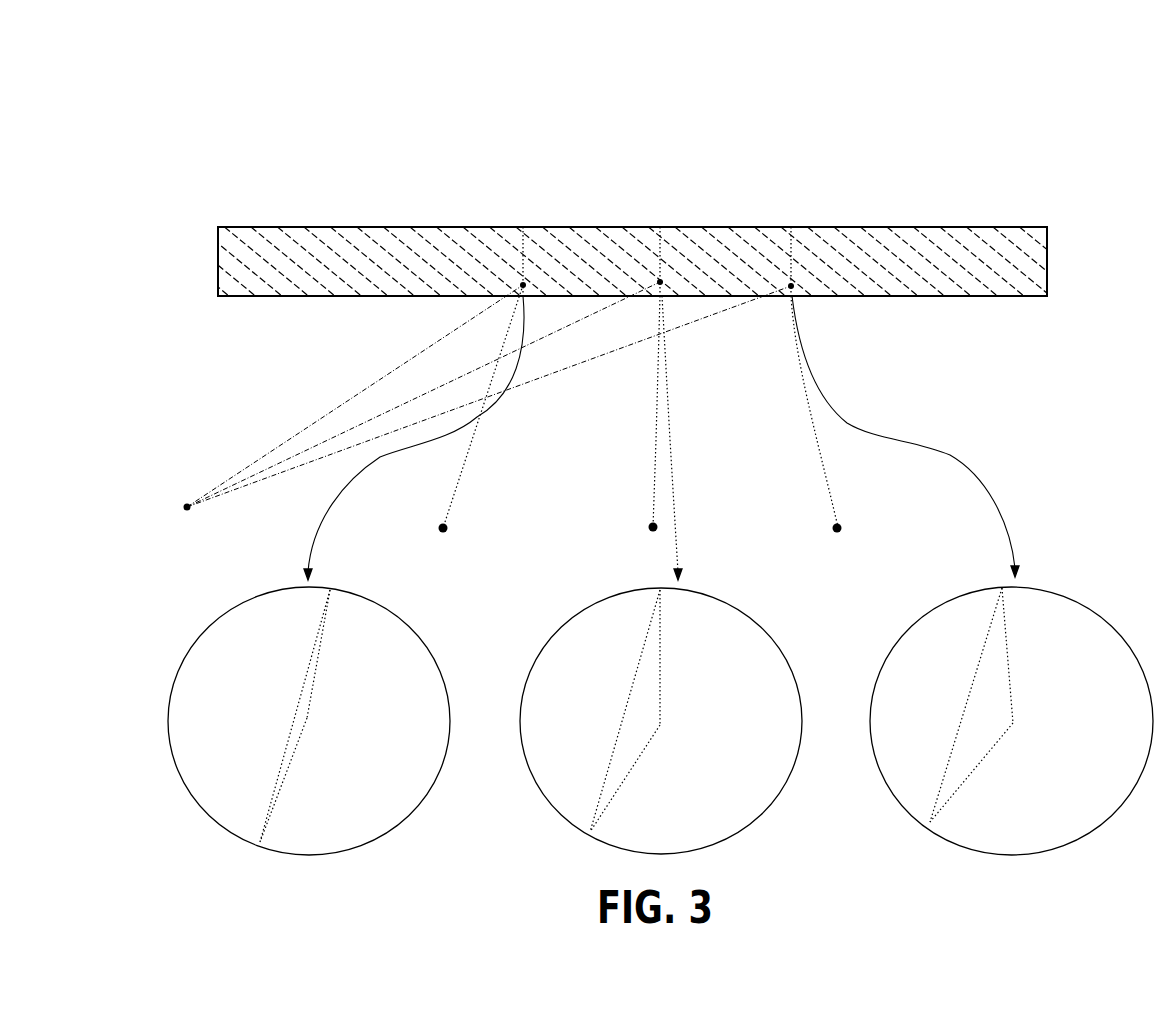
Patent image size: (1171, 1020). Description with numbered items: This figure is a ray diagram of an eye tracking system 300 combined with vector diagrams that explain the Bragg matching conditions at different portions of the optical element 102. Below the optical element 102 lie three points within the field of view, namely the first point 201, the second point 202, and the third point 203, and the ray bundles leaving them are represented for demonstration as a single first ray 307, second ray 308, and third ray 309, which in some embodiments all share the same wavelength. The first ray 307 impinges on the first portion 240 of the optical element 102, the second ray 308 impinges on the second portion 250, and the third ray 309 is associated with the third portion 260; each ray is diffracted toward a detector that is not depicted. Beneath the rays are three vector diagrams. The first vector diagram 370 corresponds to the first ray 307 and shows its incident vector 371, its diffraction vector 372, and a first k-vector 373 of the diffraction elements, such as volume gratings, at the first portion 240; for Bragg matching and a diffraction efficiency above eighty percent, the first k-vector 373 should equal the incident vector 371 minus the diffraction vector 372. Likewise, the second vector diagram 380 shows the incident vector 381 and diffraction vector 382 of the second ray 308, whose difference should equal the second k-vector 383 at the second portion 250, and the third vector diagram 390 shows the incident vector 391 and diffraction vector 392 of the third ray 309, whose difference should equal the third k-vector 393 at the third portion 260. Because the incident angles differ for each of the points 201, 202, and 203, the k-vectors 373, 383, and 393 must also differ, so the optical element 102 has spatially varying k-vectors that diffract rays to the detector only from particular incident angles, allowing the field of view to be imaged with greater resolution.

The eye tracking system 300 is at (717, 80).
The optical element 102 is at (350, 226).
The first portion 240 is at (518, 237).
The second portion 250 is at (667, 237).
The third portion 260 is at (800, 237).
The first ray 307 is at (488, 396).
The second ray 308 is at (638, 438).
The third ray 309 is at (640, 406).
The first point 201 is at (447, 531).
The second point 202 is at (650, 531).
The third point 203 is at (838, 532).
The first vector diagram 370 is at (450, 705).
The incident vector 371 is at (317, 688).
The diffraction vector 372 is at (302, 755).
The first k-vector 373 is at (280, 773).
The second vector diagram 380 is at (802, 688).
The incident vector 381 is at (662, 698).
The diffraction vector 382 is at (650, 740).
The second k-vector 383 is at (598, 788).
The third vector diagram 390 is at (1135, 655).
The incident vector 391 is at (1008, 672).
The diffraction vector 392 is at (983, 755).
The third k-vector 393 is at (967, 702).